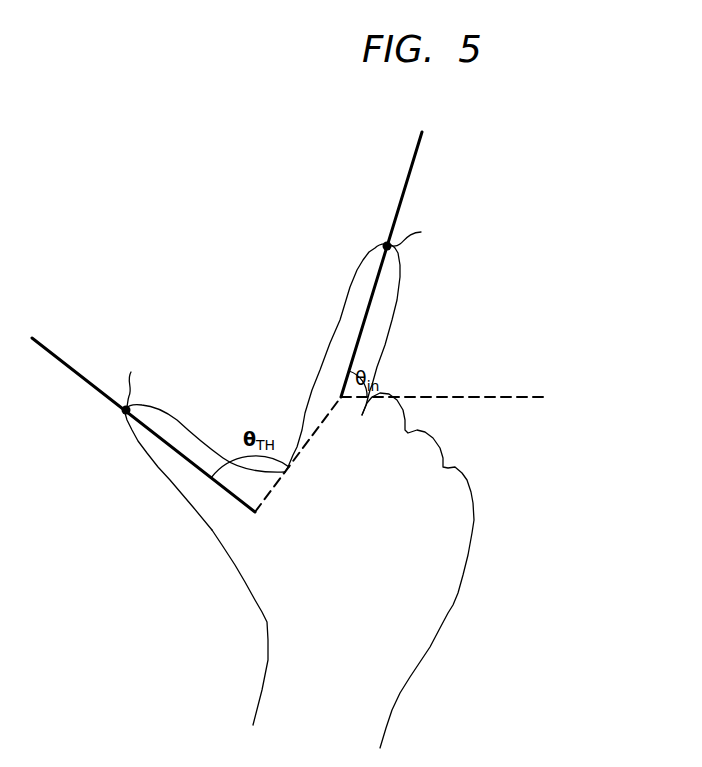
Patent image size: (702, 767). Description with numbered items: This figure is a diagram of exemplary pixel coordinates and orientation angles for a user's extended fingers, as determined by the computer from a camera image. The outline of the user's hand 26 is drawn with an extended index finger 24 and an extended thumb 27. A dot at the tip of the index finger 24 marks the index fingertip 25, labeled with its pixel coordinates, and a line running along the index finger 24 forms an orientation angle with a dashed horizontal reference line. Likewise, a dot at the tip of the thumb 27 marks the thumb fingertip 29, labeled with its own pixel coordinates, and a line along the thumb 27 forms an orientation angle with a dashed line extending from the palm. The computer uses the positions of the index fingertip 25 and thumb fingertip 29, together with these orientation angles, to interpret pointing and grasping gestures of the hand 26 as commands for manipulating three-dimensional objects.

The index finger 24 is at (345, 303).
The index fingertip 25 is at (387, 246).
The user's hand 26 is at (458, 595).
The thumb 27 is at (172, 480).
The thumb fingertip 29 is at (126, 410).